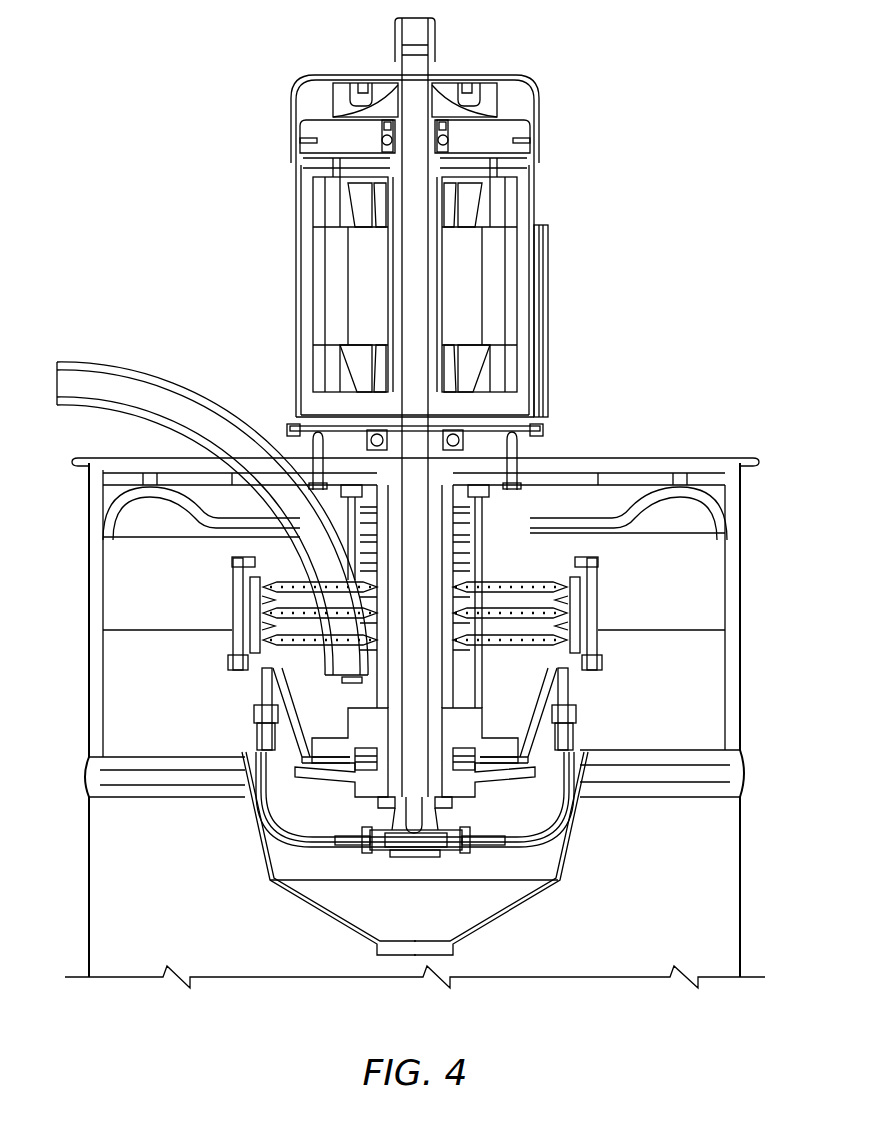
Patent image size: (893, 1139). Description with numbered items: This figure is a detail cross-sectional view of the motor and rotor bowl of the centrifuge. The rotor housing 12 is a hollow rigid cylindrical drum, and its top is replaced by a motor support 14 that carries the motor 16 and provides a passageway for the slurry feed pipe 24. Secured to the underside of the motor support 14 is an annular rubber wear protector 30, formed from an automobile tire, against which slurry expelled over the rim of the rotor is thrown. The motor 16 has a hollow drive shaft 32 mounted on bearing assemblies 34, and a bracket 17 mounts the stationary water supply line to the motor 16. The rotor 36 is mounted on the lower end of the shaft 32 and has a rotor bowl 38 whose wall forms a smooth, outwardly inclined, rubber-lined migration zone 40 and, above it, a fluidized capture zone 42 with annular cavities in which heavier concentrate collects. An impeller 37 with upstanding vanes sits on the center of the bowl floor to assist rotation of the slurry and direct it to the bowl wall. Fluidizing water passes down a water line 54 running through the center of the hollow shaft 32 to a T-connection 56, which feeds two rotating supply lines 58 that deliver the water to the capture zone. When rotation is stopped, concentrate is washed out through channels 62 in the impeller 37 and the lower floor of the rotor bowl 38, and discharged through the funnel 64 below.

The rotor housing 12 is at (730, 836).
The motor support 14 is at (711, 461).
The motor 16 is at (298, 220).
The bracket 17 is at (550, 232).
The slurry feed pipe 24 is at (121, 364).
The annular rubber wear protector 30 is at (92, 530).
The hollow drive shaft 32 is at (440, 253).
The bearing assemblies 34 is at (447, 140).
The rotor 36 is at (510, 715).
The impeller 37 is at (360, 718).
The rotor bowl 38 is at (556, 688).
The migration zone 40 is at (575, 675).
The fluidized capture zone 42 is at (262, 598).
The water line 54 is at (428, 300).
The T-connection 56 is at (413, 853).
The rotating supply lines 58 is at (262, 620).
The channels 62 is at (367, 760).
The funnel 64 is at (548, 857).